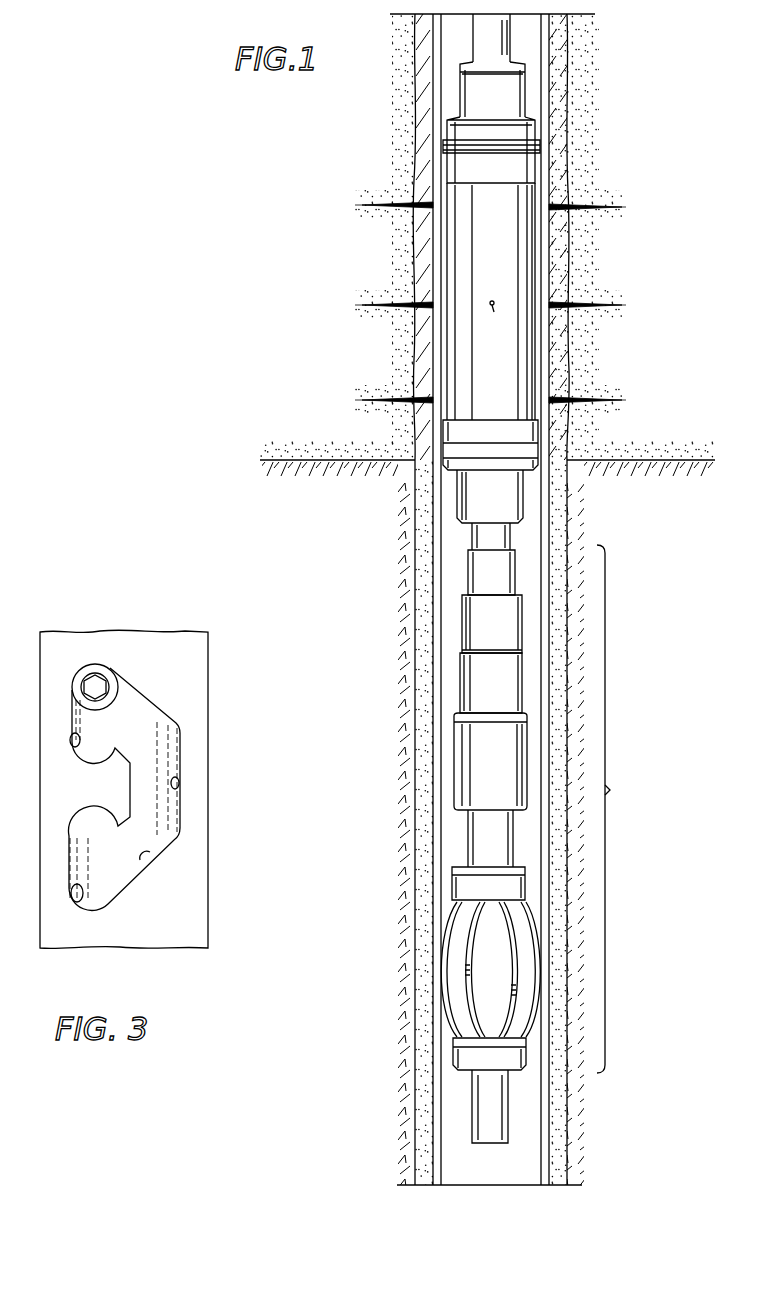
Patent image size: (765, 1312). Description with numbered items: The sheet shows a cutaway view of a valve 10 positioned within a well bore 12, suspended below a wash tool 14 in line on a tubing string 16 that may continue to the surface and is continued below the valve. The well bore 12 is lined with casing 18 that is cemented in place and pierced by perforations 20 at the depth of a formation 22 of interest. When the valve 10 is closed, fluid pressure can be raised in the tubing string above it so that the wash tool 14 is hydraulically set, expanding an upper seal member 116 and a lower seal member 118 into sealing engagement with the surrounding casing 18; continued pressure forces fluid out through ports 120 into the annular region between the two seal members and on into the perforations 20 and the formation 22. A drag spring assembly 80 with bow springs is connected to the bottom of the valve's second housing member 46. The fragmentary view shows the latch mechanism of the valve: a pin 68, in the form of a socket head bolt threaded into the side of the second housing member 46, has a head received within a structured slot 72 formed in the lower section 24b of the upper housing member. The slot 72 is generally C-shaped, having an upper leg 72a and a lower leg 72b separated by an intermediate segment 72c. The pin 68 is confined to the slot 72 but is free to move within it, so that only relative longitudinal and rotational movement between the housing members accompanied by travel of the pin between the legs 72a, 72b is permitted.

In FIG. 1, the valve 10 is at (494, 583).
In FIG. 1, the well bore 12 is at (433, 530).
In FIG. 1, the wash tool 14 is at (515, 258).
In FIG. 1, the tubing string 16 is at (502, 43).
In FIG. 1, the casing 18 is at (546, 84).
In FIG. 1, the perforations 20 is at (543, 203).
In FIG. 1, the formation 22 is at (354, 264).
In FIG. 3, the lower section of upper housing member 24b is at (193, 913).
In FIG. 3, the second housing member 46 is at (135, 710).
In FIG. 3, the pin 68 is at (97, 680).
In FIG. 3, the slot 72 is at (157, 850).
In FIG. 3, the upper leg 72a is at (80, 752).
In FIG. 3, the lower leg 72b is at (80, 907).
In FIG. 3, the intermediate segment 72c is at (178, 785).
In FIG. 1, the drag spring assembly 80 is at (444, 1031).
In FIG. 1, the upper seal member 116 is at (532, 144).
In FIG. 1, the lower seal member 118 is at (532, 454).
In FIG. 1, the ports 120 is at (501, 321).